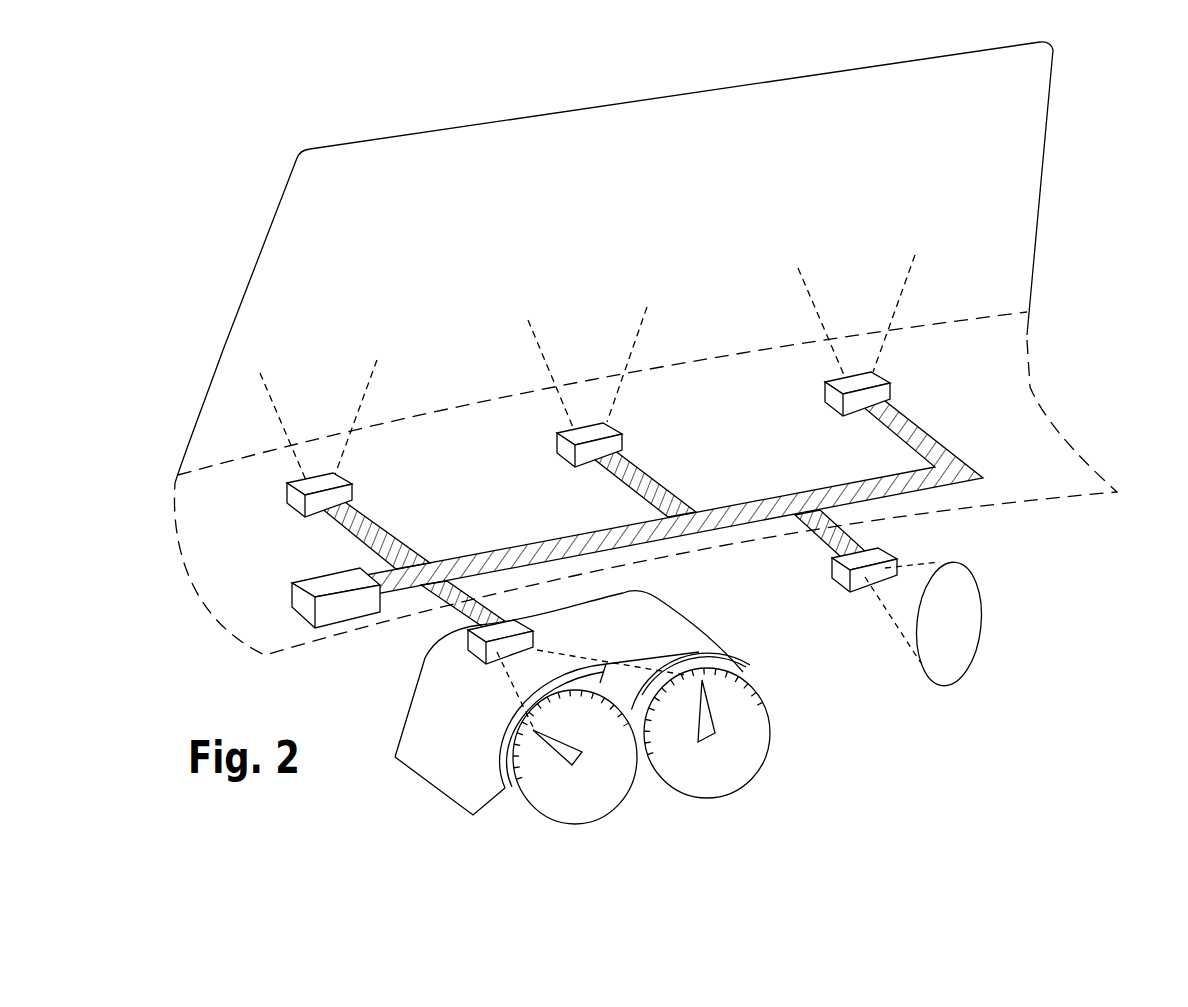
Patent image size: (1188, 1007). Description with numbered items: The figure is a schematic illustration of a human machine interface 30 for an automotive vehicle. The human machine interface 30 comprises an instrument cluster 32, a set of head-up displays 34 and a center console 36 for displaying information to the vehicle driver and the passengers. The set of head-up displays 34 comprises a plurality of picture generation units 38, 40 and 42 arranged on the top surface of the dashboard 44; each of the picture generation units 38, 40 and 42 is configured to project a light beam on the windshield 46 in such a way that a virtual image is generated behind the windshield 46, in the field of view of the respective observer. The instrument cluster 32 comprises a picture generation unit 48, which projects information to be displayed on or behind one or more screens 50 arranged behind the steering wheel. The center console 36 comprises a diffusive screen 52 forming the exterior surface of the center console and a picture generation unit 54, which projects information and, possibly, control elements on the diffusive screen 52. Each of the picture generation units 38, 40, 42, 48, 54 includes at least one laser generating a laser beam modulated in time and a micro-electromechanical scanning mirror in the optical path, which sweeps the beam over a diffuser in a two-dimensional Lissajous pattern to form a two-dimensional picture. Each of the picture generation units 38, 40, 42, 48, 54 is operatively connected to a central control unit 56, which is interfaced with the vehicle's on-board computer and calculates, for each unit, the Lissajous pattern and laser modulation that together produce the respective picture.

The human machine interface 30 is at (1010, 573).
The instrument cluster 32 is at (748, 648).
The set of head-up displays 34 is at (964, 445).
The center console 36 is at (882, 697).
The picture generation unit 38 is at (339, 476).
The picture generation unit 40 is at (612, 424).
The picture generation unit 42 is at (886, 378).
The dashboard 44 is at (1036, 390).
The windshield 46 is at (1046, 182).
The picture generation unit 48 is at (470, 633).
The screens 50 is at (597, 787).
The diffusive screen 52 is at (977, 632).
The picture generation unit 54 is at (842, 579).
The central control unit 56 is at (320, 583).